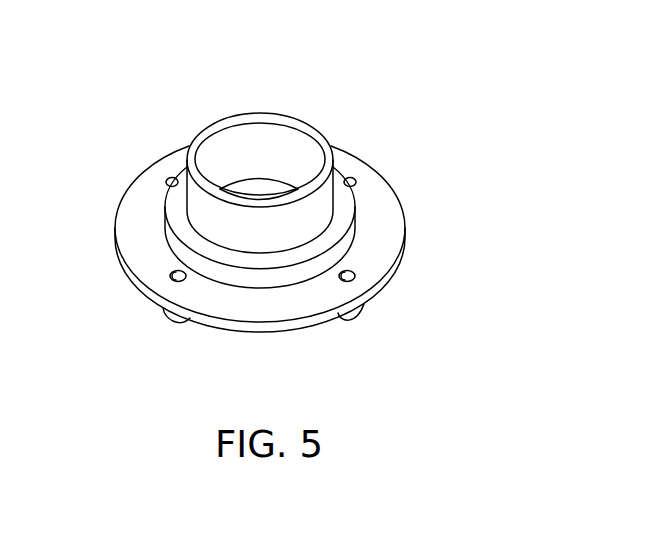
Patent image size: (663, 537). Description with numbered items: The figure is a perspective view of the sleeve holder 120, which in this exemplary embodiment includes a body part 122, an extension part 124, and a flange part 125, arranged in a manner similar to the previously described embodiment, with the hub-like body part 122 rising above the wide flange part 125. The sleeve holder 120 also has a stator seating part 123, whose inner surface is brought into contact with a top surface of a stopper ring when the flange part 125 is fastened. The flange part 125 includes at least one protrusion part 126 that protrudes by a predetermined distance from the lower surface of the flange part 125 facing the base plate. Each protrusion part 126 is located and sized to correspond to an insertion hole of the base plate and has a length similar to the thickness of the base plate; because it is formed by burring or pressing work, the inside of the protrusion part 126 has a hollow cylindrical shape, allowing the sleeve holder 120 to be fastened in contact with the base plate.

The sleeve holder 120 is at (348, 107).
The body part 122 is at (204, 203).
The stator seating part 123 is at (252, 260).
The extension part 124 is at (365, 233).
The flange part 125 is at (375, 243).
The protrusion part 126 is at (355, 316).